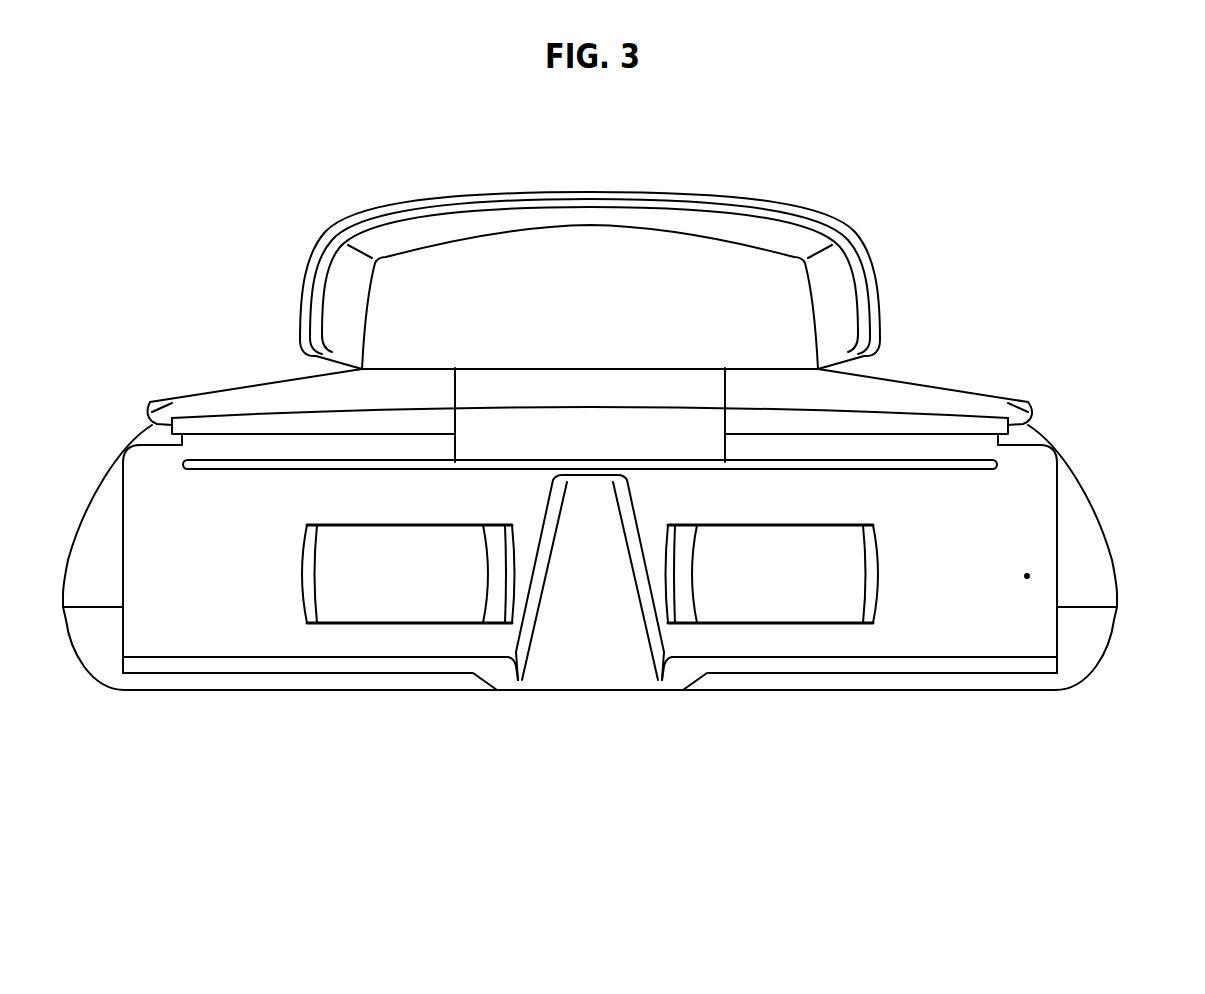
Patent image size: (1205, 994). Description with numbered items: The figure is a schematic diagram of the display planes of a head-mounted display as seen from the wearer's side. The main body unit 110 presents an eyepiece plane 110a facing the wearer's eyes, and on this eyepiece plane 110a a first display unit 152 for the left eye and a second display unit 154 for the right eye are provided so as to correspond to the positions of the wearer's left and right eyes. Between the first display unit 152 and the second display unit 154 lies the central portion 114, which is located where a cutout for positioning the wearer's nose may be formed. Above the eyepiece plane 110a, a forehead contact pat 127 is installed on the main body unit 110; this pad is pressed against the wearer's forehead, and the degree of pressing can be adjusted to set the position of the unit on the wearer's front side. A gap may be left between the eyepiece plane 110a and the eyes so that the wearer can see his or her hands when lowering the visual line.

The forehead contact pat 127 is at (731, 197).
The main body unit 110 is at (1092, 488).
The eyepiece plane 110a is at (1027, 576).
The central partition 114 is at (587, 650).
The first display unit 152 is at (403, 605).
The second display unit 154 is at (777, 605).